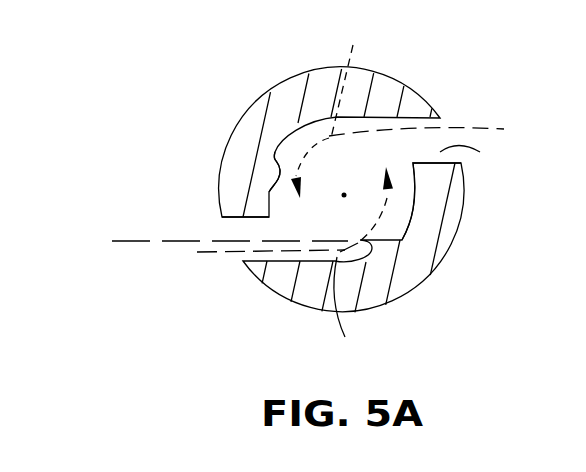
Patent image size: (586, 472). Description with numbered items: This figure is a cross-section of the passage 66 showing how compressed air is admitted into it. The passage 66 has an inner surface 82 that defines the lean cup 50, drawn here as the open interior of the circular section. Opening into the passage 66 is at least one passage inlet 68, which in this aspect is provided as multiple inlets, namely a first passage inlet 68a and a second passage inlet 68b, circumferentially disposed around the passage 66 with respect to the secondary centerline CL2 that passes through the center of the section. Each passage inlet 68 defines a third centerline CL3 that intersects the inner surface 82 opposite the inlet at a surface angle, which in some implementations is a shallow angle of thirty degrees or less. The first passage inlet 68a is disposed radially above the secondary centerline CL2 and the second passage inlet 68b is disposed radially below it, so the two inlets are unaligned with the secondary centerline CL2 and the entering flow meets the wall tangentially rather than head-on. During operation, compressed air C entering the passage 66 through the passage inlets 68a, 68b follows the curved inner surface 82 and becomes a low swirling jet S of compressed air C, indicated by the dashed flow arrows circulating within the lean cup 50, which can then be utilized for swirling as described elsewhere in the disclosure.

The lean cup 50 is at (334, 173).
The passage 66 is at (405, 277).
The passage inlet 68 is at (450, 211).
The first passage inlet 68a is at (422, 142).
The second passage inlet 68b is at (240, 222).
The inner surface 82 is at (276, 170).
The low swirling jet S is at (346, 76).
The compressed air C is at (425, 131).
The secondary centerline CL2 is at (337, 210).
The third centerline CL3 is at (200, 243).